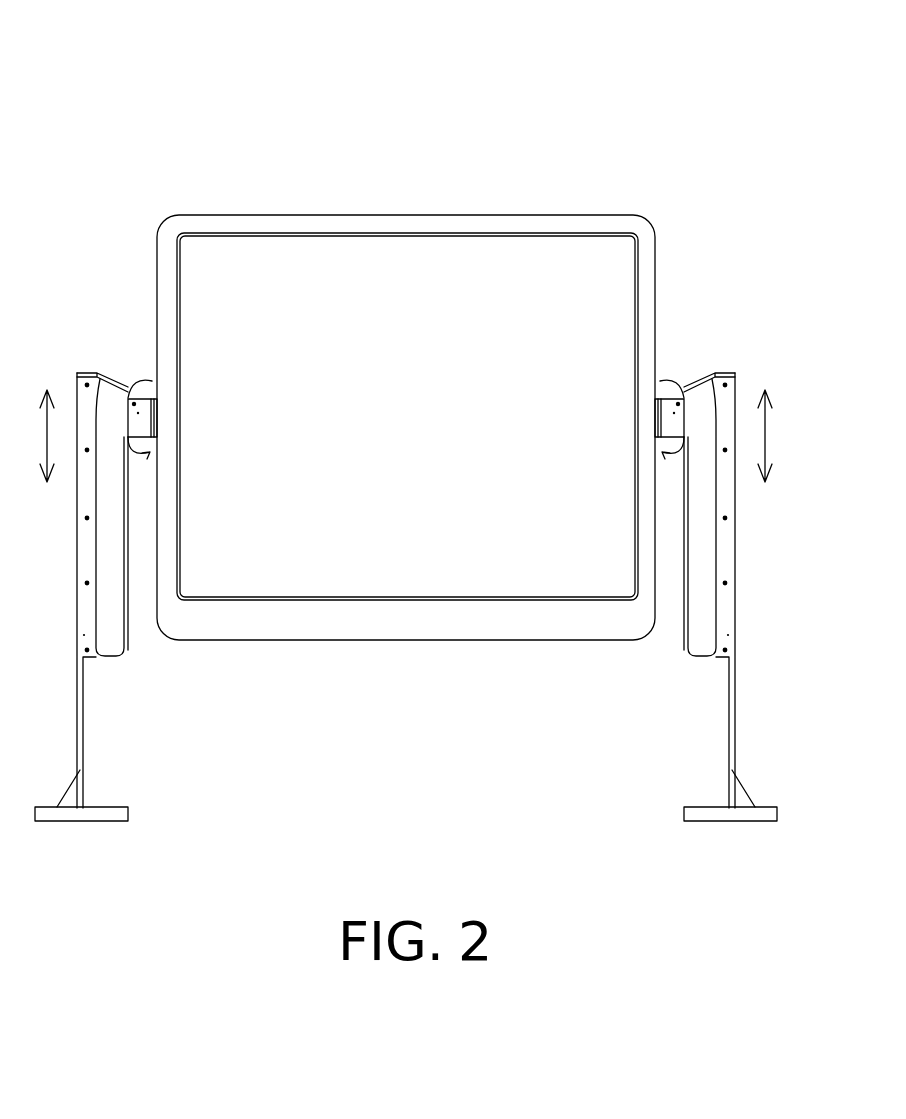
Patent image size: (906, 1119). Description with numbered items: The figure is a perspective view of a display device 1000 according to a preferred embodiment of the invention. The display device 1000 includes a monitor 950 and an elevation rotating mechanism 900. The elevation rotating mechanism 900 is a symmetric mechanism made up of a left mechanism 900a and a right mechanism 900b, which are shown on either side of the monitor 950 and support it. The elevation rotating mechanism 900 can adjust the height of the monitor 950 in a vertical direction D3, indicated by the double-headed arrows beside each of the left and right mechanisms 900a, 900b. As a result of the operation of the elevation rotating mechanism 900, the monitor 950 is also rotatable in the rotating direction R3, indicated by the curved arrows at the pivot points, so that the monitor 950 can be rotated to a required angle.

The display device 1000 is at (118, 42).
The monitor 950 is at (413, 253).
The elevation rotating mechanism 900 is at (406, 597).
The left mechanism 900a is at (120, 652).
The right mechanism 900b is at (692, 652).
The rotating direction R3 is at (405, 401).
The vertical direction D3 is at (408, 436).